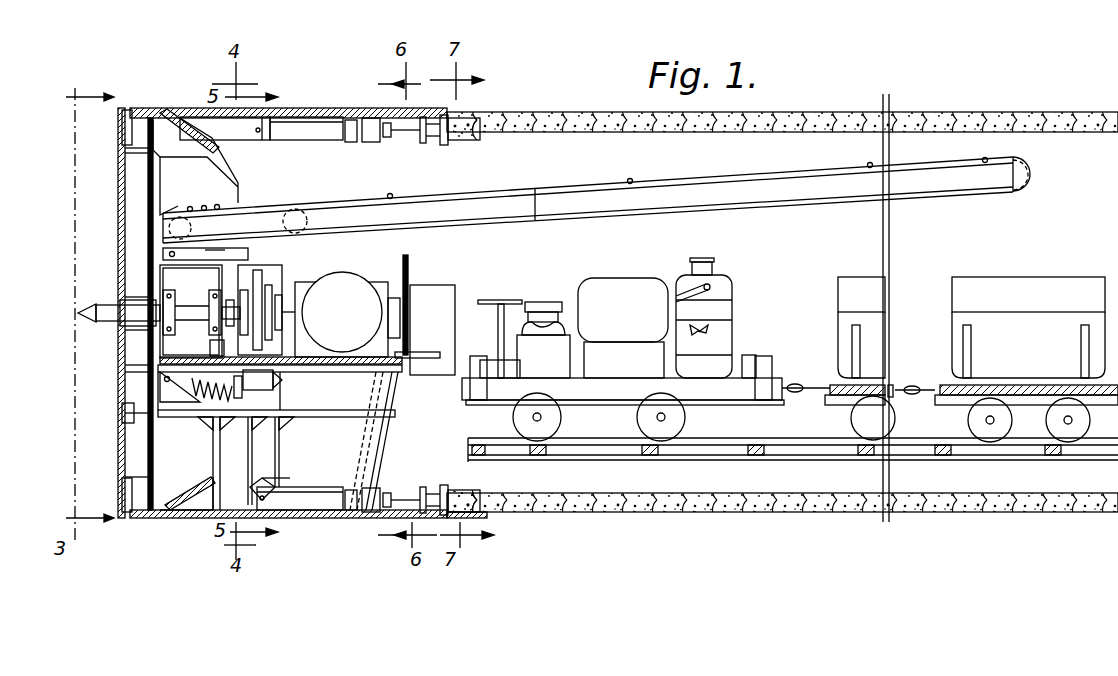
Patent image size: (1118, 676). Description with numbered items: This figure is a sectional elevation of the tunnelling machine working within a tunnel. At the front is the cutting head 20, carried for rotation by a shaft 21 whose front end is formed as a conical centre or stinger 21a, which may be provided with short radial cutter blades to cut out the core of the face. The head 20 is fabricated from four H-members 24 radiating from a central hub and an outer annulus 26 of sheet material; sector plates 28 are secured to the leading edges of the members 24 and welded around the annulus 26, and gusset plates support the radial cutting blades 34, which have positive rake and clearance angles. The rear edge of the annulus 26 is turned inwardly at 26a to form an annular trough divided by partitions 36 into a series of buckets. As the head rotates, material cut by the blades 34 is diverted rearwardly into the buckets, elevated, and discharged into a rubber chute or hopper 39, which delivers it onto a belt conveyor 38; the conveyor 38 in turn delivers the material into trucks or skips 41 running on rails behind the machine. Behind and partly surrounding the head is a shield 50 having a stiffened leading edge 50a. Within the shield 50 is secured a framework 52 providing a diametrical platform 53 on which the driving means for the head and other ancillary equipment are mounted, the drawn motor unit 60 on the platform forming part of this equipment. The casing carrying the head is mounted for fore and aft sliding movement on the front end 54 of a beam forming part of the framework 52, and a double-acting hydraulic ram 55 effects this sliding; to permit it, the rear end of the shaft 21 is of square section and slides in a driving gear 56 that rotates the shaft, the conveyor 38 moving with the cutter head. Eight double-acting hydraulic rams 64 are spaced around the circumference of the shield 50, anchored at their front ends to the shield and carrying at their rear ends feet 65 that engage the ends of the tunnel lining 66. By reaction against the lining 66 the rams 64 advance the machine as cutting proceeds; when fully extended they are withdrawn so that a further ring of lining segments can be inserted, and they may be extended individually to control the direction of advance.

The cutting head 20 is at (118, 216).
The shaft 21 is at (192, 300).
The conical centre or stinger 21a is at (94, 310).
The H-members 24 is at (124, 182).
The outer annulus 26 is at (136, 518).
The inwardly turned edge of annulus 26a is at (192, 512).
The sector plates 28 is at (120, 412).
The radial cutting blades 34 is at (125, 370).
The partitions 36 is at (190, 120).
The belt conveyor 38 is at (624, 184).
The rubber chute or hopper 39 is at (236, 178).
The trucks or skips 41 is at (1023, 292).
The shield 50 is at (292, 108).
The stiffened leading edge 50a is at (192, 108).
The framework 52 is at (383, 398).
The diametrical platform 53 is at (212, 354).
The front end of beam 54 is at (172, 404).
The double-acting hydraulic ram 55 is at (226, 384).
The driving gear 56 is at (258, 288).
The motor 60 is at (346, 276).
The double-acting hydraulic rams 64 is at (303, 486).
The feet 65 is at (452, 500).
The tunnel lining 66 is at (545, 496).